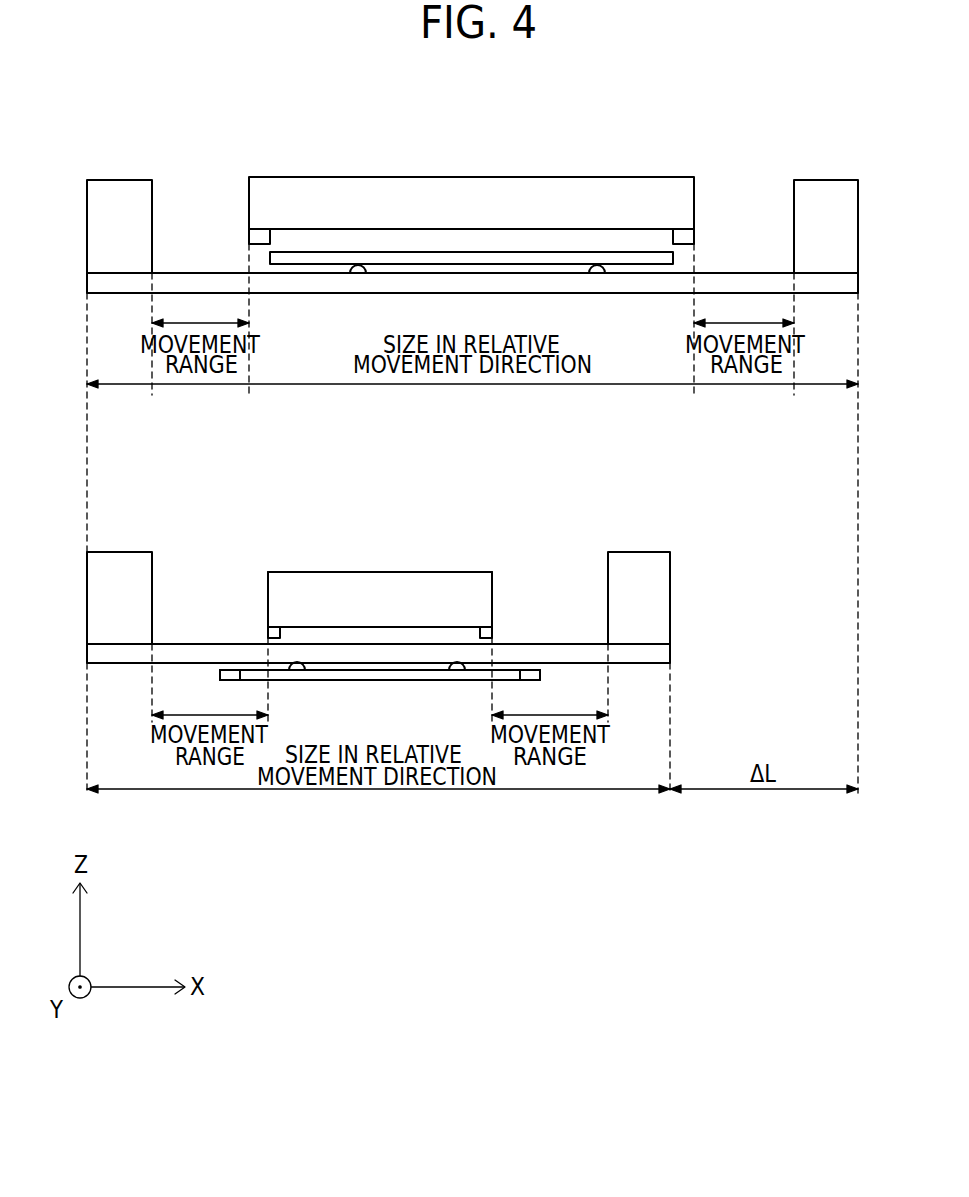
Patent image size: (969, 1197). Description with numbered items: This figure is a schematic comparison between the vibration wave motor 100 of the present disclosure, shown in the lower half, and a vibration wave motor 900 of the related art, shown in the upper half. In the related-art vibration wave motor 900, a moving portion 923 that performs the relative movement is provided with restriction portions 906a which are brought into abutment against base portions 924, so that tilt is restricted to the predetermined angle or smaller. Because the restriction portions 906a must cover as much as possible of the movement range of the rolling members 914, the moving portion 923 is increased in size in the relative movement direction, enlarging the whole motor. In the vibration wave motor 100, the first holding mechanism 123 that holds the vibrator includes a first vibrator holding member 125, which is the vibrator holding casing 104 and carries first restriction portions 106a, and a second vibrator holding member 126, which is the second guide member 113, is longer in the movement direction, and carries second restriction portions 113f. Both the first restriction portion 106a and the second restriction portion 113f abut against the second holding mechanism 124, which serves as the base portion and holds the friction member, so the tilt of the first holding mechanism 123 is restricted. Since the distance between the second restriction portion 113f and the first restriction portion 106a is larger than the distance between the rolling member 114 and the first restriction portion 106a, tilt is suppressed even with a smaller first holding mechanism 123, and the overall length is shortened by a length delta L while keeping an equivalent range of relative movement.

The vibration wave motor of a related art 900 is at (63, 195).
The rolling members 914 is at (596, 266).
The restriction portions 906a is at (249, 237).
The moving portion 923 is at (694, 202).
The base portions 924 is at (858, 228).
The vibration wave motor 100 is at (63, 558).
The first holding mechanism 123 is at (436, 470).
The second vibrator holding member 126 is at (393, 677).
The second guide member 113 is at (380, 575).
The first vibrator holding member 125 is at (478, 572).
The vibrator holding casing 104 is at (445, 549).
The second holding mechanism 124 is at (670, 582).
The second restriction portions 113f is at (228, 672).
The first restriction portions 106a is at (268, 632).
The rolling member 114 is at (457, 672).